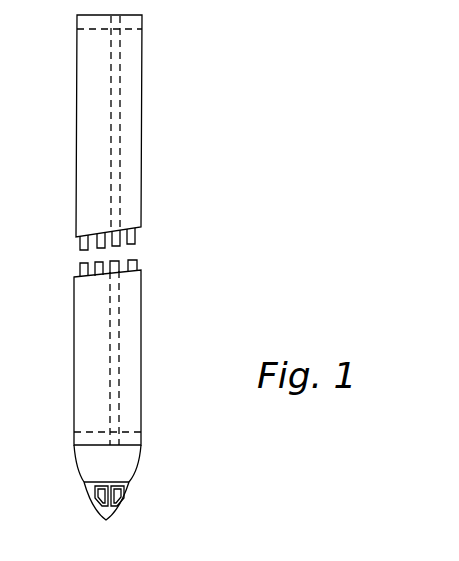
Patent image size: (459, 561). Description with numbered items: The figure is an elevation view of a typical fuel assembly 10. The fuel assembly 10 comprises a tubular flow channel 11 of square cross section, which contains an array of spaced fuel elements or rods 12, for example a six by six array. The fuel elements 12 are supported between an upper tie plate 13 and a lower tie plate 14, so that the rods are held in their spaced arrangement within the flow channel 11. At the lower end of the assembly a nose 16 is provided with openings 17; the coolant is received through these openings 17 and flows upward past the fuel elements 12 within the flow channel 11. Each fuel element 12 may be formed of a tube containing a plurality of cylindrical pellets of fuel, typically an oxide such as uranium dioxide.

The fuel assembly 10 is at (165, 127).
The tubular flow channel 11 is at (141, 182).
The fuel elements 12 is at (119, 210).
The upper tie plate 13 is at (142, 23).
The lower tie plate 14 is at (141, 440).
The nose 16 is at (121, 506).
The openings 17 is at (95, 493).